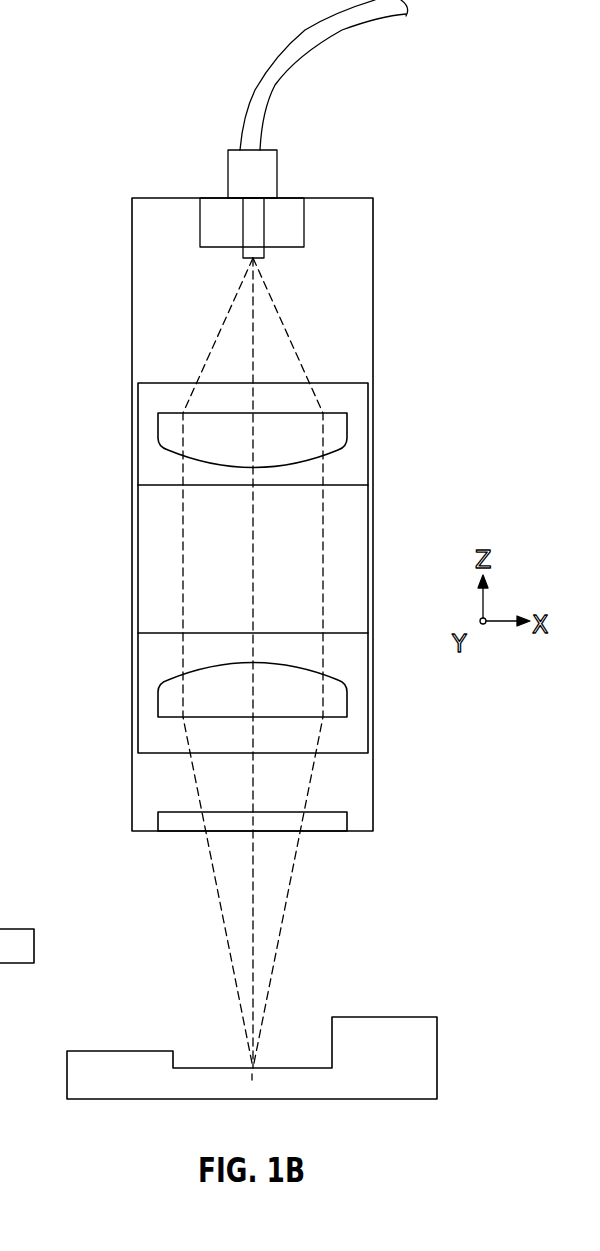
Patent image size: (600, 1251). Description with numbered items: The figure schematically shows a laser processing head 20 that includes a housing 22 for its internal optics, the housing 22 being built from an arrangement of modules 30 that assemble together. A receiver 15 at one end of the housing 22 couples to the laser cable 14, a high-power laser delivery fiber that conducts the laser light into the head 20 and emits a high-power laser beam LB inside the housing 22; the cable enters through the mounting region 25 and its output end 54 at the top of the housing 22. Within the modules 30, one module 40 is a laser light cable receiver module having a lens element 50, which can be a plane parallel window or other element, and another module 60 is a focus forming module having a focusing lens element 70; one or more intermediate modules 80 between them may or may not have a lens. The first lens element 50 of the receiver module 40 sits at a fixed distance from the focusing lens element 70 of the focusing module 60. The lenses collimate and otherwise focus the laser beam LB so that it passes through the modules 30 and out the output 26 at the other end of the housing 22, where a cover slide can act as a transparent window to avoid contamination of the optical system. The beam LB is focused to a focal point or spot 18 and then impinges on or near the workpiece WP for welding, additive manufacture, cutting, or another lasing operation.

The laser cable 14 is at (277, 54).
The receiver 15 is at (228, 175).
The focal point or spot 18 is at (252, 1080).
The laser processing head 20 is at (73, 168).
The housing 22 is at (132, 283).
The housing mount / interior 25 is at (373, 298).
The output 26 is at (347, 820).
The modules 30 is at (241, 568).
The laser light cable receiver module 40 is at (368, 453).
The lens element 50 is at (347, 418).
The fiber output end / nozzle 54 is at (265, 223).
The focus forming module 60 is at (368, 663).
The focusing lens element 70 is at (347, 703).
The intermediate modules 80 is at (368, 503).
The laser beam LB is at (283, 917).
The workpiece WP is at (120, 1050).